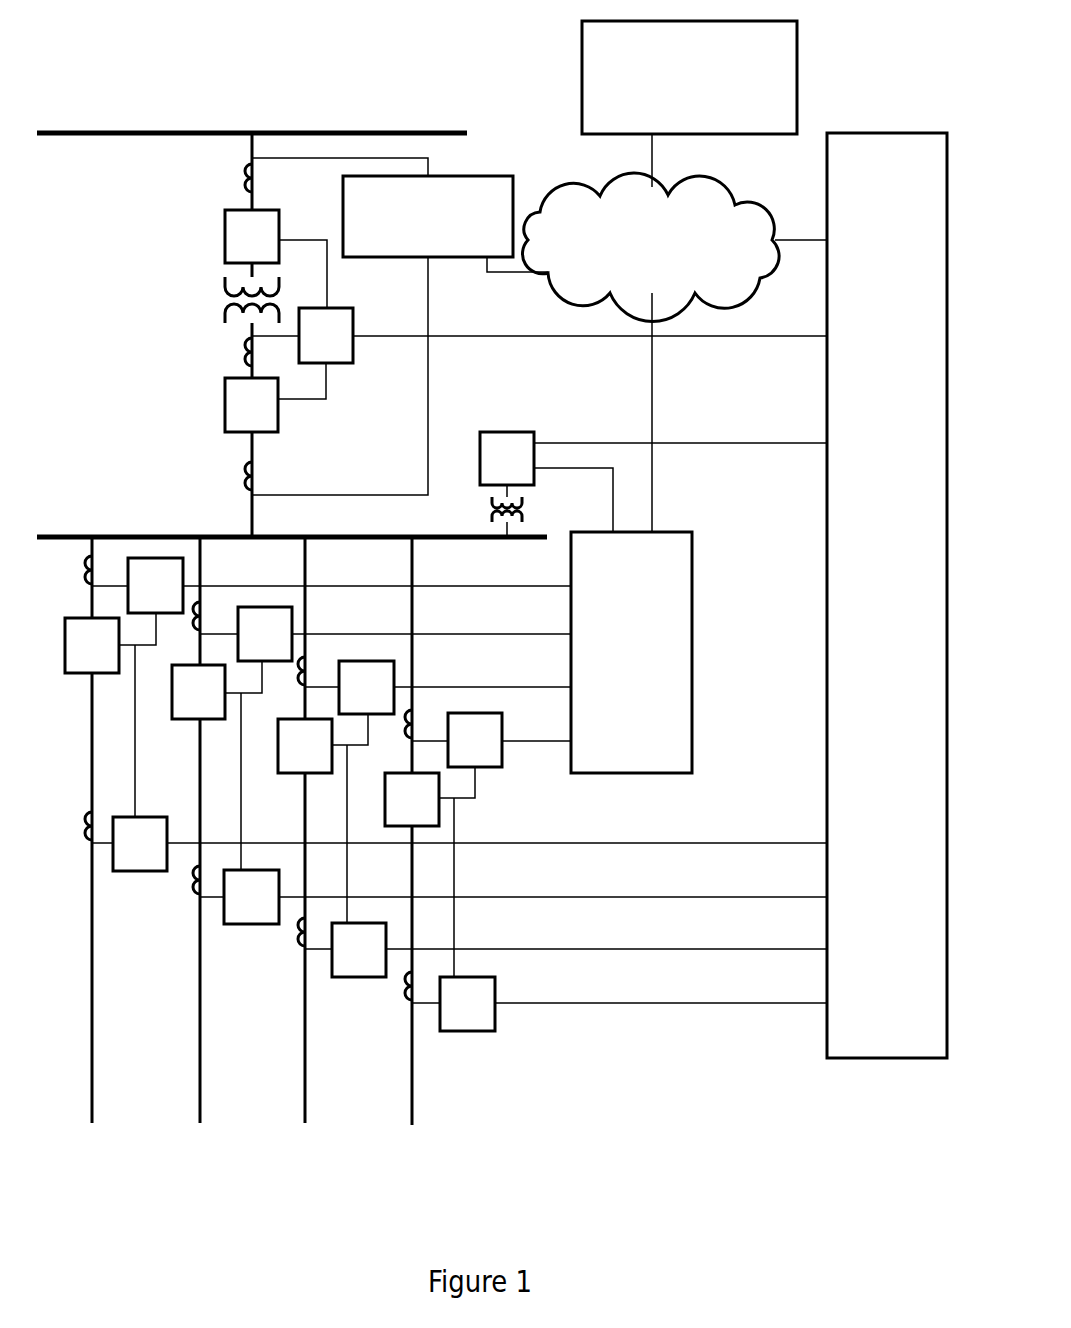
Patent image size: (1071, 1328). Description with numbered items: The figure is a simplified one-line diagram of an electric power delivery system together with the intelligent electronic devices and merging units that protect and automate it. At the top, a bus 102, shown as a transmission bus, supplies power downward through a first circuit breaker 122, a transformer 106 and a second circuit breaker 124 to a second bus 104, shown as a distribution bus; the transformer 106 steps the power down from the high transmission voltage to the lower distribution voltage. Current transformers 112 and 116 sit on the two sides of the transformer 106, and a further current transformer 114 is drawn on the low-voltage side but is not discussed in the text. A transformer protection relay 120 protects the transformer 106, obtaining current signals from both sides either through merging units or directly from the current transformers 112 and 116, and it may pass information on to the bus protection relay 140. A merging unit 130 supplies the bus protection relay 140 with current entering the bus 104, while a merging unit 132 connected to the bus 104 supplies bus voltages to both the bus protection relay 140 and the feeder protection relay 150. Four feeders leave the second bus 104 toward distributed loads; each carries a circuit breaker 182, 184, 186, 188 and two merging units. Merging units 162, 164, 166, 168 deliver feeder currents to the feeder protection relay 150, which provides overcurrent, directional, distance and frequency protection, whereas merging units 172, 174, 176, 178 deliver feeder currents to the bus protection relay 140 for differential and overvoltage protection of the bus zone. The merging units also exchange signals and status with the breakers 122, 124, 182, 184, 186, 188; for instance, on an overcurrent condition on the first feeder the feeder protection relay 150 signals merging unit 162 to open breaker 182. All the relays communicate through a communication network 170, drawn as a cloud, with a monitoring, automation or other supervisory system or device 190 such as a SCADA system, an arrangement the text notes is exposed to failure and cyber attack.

The bus 102 is at (110, 137).
The second bus 104 is at (68, 536).
The transformer 106 is at (224, 292).
The current transformer 112 is at (246, 182).
The current transformer 114 is at (246, 355).
The current transformer 116 is at (246, 470).
The transformer protection relay 120 is at (490, 176).
The circuit breaker 122 is at (224, 238).
The circuit breaker 124 is at (224, 406).
The merging unit 130 is at (354, 320).
The merging unit 132 is at (500, 432).
The bus protection relay 140 is at (866, 1059).
The feeder protection relay 150 is at (640, 774).
The merging unit 162 is at (185, 580).
The merging unit 164 is at (294, 623).
The merging unit 166 is at (396, 675).
The merging unit 168 is at (504, 727).
The communication network 170 is at (748, 205).
The merging unit 172 is at (140, 872).
The merging unit 174 is at (255, 925).
The merging unit 176 is at (365, 978).
The merging unit 178 is at (475, 1032).
The circuit breaker 182 is at (72, 674).
The circuit breaker 184 is at (180, 720).
The circuit breaker 186 is at (290, 774).
The circuit breaker 188 is at (440, 814).
The monitoring, automation, or other supervisory system or device 190 is at (798, 32).